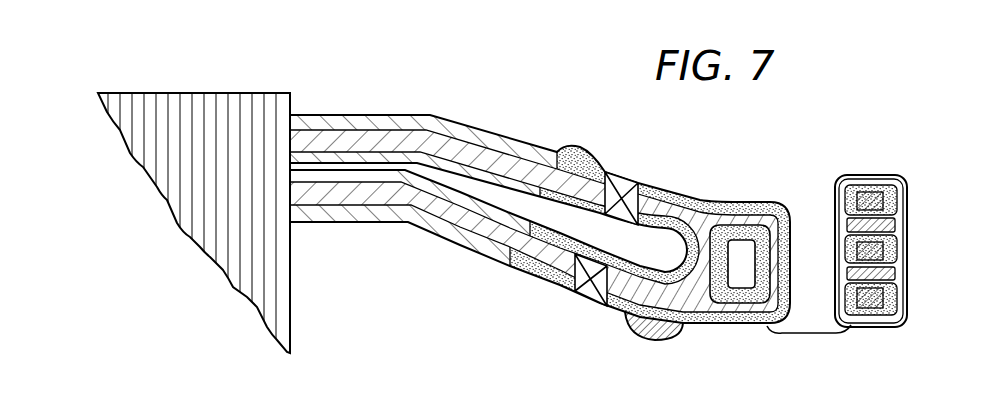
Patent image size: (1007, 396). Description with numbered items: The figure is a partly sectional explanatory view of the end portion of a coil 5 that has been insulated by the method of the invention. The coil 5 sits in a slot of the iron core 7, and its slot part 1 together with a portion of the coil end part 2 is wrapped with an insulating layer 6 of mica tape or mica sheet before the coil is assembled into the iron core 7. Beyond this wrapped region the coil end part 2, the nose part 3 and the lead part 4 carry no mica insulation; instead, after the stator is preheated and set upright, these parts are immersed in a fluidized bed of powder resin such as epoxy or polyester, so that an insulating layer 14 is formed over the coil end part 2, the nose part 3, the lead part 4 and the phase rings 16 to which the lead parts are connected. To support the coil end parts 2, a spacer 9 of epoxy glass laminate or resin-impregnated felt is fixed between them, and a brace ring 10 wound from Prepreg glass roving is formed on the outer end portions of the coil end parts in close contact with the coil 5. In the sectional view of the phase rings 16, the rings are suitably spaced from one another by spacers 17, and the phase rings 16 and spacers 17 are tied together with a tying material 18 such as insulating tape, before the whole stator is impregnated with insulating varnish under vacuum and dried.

The iron core 7 is at (233, 93).
The slot part 1 is at (343, 133).
The insulating layer 6 is at (422, 116).
The coil end part 2 is at (540, 168).
The coil 5 is at (440, 213).
The spacer 9 is at (628, 175).
The insulating layer 14 is at (666, 187).
The lead part 4 is at (747, 225).
The nose part 3 is at (712, 296).
The brace ring 10 is at (640, 333).
The phase ring 16 is at (898, 202).
The spacer 17 is at (900, 226).
The tying material 18 is at (897, 297).